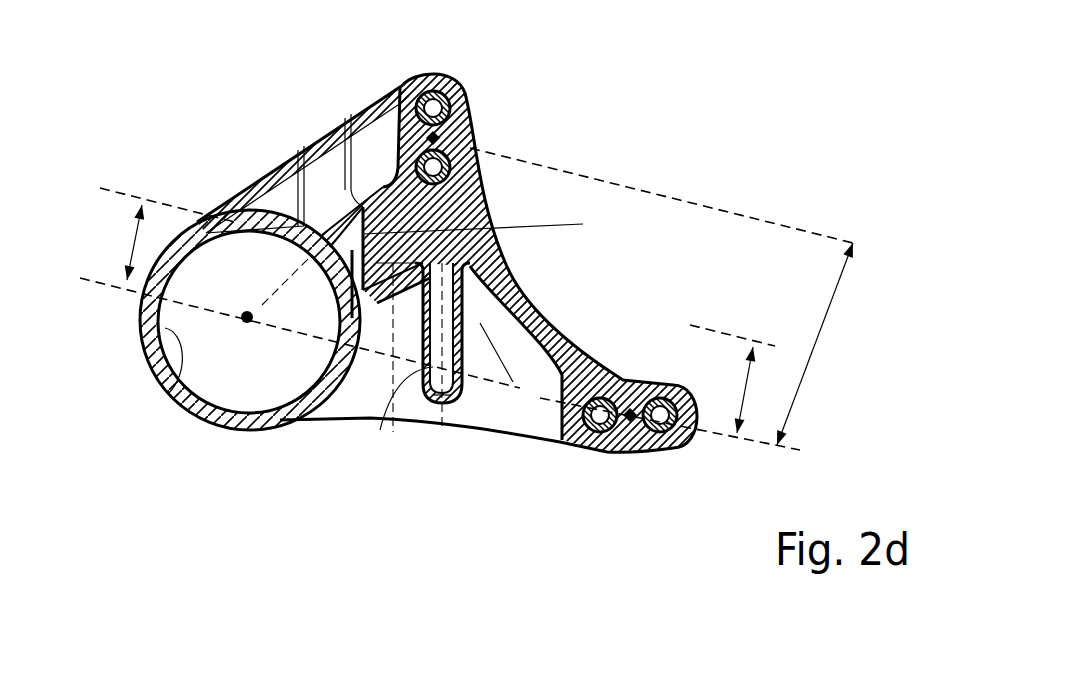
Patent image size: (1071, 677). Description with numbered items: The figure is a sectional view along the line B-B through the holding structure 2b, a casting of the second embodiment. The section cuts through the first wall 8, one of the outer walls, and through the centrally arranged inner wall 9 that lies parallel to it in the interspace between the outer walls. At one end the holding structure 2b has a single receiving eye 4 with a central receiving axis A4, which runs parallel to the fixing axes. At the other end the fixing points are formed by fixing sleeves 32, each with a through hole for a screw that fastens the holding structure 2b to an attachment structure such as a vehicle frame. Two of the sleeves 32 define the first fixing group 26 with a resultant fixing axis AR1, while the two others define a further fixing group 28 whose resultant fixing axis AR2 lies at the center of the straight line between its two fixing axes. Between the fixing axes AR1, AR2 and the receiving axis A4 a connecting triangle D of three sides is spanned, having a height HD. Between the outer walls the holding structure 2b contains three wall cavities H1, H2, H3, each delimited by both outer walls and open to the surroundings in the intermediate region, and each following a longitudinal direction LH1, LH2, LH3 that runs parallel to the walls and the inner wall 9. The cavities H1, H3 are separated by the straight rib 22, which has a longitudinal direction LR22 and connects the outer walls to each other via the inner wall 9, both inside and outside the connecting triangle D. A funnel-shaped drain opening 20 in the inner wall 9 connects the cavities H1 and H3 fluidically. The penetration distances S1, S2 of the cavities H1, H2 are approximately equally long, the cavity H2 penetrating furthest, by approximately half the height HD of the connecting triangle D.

The holding structure 2b is at (410, 229).
The receiving eye 4 is at (168, 396).
The receiving axis A4 is at (240, 326).
The first wall 8 is at (350, 393).
The inner wall 9 is at (403, 83).
The drain opening 20 is at (345, 208).
The rib 22 is at (540, 437).
The first fixing group 26 is at (474, 113).
The further fixing group 28 is at (697, 385).
The fixing sleeves 32 is at (440, 153).
The section line B-B is at (140, 97).
The penetration distance of cavity H1 S1 is at (156, 234).
The penetration distance of cavity H2 S2 is at (755, 400).
The height of the connecting triangle HD is at (800, 355).
The connecting triangle D is at (557, 383).
The resultant fixing axis AR1 is at (445, 135).
The resultant fixing axis AR2 is at (632, 402).
The cavity H1 is at (394, 345).
The cavity H2 is at (463, 370).
The cavity H3 is at (390, 152).
The longitudinal direction of cavity H1 LH1 is at (356, 405).
The longitudinal direction of cavity H2 LH2 is at (513, 384).
The longitudinal direction of cavity H3 LH3 is at (305, 140).
The longitudinal direction of rib 22 LR22 is at (442, 392).